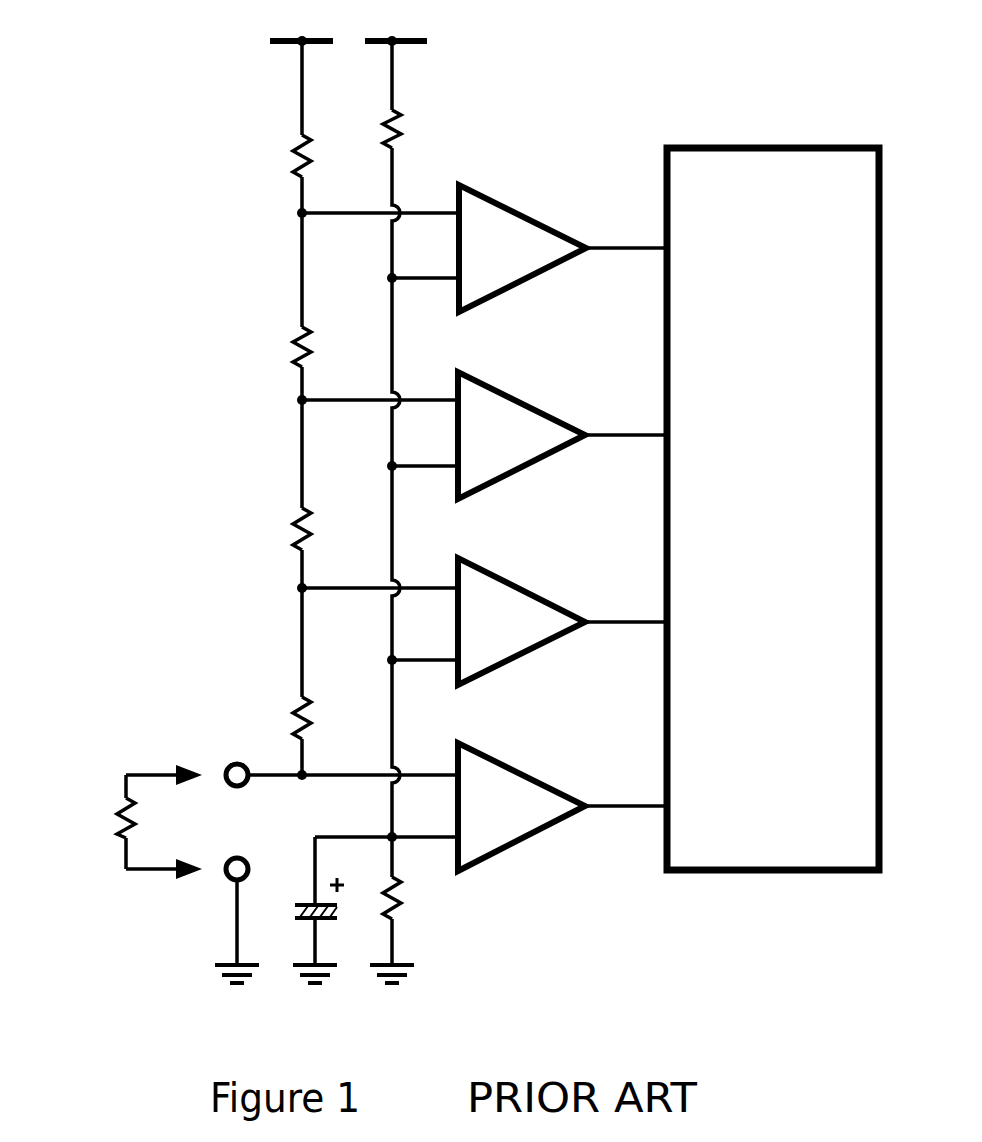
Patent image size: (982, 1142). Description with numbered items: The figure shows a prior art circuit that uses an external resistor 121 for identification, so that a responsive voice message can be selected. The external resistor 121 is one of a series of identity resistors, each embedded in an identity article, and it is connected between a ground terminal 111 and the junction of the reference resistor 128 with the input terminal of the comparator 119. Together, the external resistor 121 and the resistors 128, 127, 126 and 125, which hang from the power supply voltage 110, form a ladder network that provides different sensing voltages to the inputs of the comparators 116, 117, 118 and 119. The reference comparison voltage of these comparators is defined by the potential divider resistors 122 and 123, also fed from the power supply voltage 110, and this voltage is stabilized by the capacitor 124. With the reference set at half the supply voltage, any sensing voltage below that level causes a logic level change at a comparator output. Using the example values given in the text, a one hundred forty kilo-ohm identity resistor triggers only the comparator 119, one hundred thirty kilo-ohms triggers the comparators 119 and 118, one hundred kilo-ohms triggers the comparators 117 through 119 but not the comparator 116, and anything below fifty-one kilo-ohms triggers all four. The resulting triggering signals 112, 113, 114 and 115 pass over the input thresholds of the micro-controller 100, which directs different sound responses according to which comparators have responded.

The micro-controller 100 is at (757, 207).
The power supply voltage 110 is at (288, 40).
The ground terminal 111 is at (237, 937).
The triggering signal 112 is at (645, 248).
The triggering signal 113 is at (648, 435).
The triggering signal 114 is at (650, 620).
The triggering signal 115 is at (643, 805).
The comparator 116 is at (490, 278).
The comparator 117 is at (473, 470).
The comparator 118 is at (485, 643).
The comparator 119 is at (492, 822).
The external resistor 121 is at (117, 805).
The potential divider resistor 122 is at (405, 125).
The potential divider resistor 123 is at (400, 893).
The capacitor 124 is at (308, 903).
The resistor 125 is at (290, 147).
The resistor 126 is at (292, 342).
The resistor 127 is at (292, 535).
The reference resistor 128 is at (290, 700).